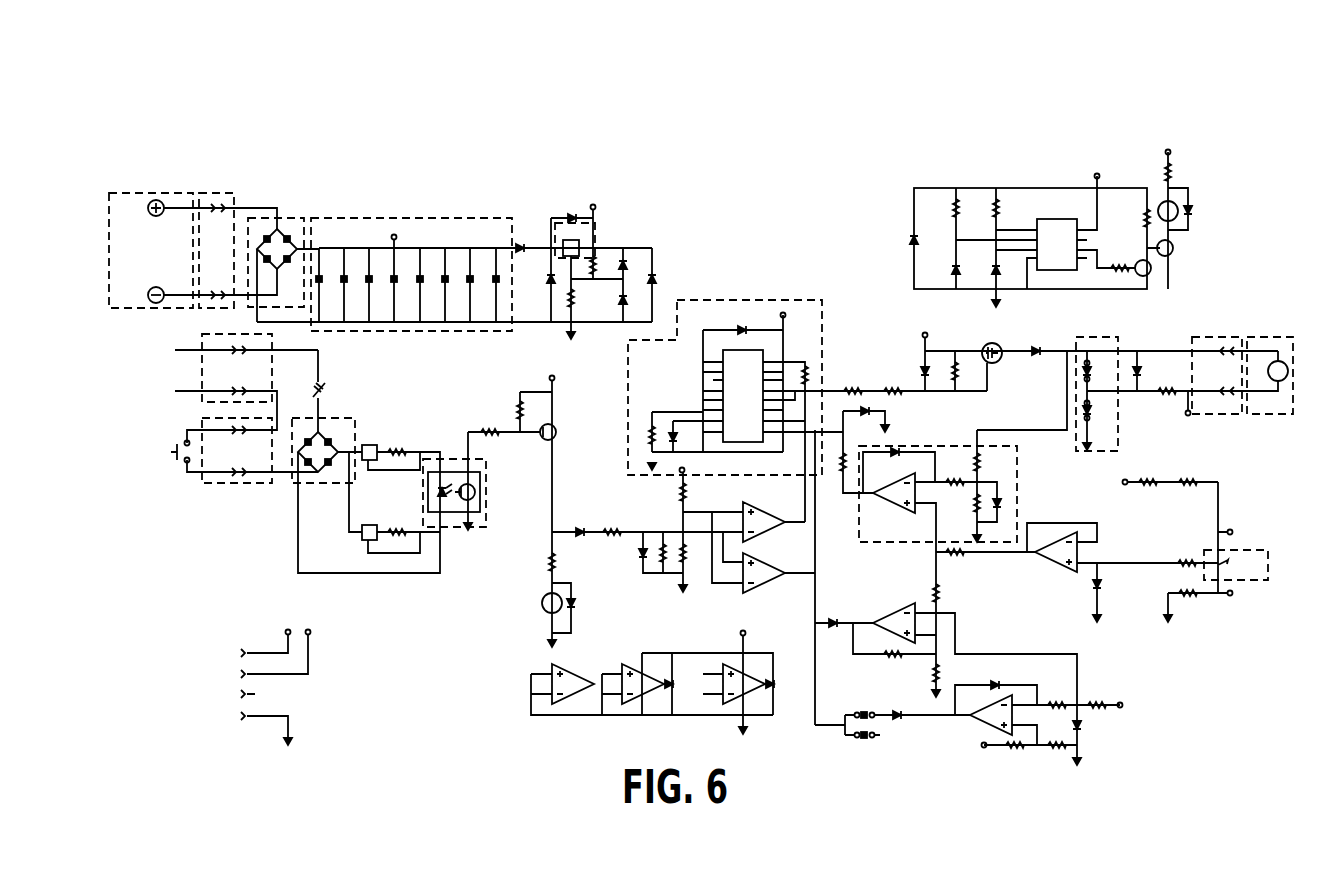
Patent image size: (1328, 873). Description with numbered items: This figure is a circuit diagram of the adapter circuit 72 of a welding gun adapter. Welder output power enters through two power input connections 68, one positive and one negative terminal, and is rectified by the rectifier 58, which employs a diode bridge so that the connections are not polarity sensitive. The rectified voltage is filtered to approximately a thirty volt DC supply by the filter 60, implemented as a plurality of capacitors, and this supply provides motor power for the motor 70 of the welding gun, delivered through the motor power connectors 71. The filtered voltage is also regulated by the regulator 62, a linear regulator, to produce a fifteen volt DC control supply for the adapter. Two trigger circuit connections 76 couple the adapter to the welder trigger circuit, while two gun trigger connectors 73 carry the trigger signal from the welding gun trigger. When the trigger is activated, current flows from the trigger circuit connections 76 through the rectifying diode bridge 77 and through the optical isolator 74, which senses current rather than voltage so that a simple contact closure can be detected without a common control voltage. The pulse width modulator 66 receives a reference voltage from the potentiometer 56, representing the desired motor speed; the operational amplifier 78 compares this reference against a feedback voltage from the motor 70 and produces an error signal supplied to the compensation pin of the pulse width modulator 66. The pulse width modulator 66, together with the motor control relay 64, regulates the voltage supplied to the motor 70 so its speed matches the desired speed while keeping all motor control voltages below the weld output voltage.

The potentiometer 56 is at (1240, 550).
The rectifier 58 is at (292, 218).
The filter 60 is at (408, 218).
The regulator 62 is at (555, 223).
The motor control relay 64 is at (1097, 337).
The pulse width modulator 66 is at (762, 300).
The power input connections 68 is at (154, 193).
The motor 70 is at (1278, 337).
The motor power connectors 71 is at (1218, 337).
The adapter circuit 72 is at (876, 74).
The gun trigger connectors 73 is at (250, 483).
The optical isolator 74 is at (458, 527).
The trigger circuit connections 76 is at (201, 340).
The rectifying diode bridge 77 is at (340, 418).
The operational amplifier 78 is at (912, 446).